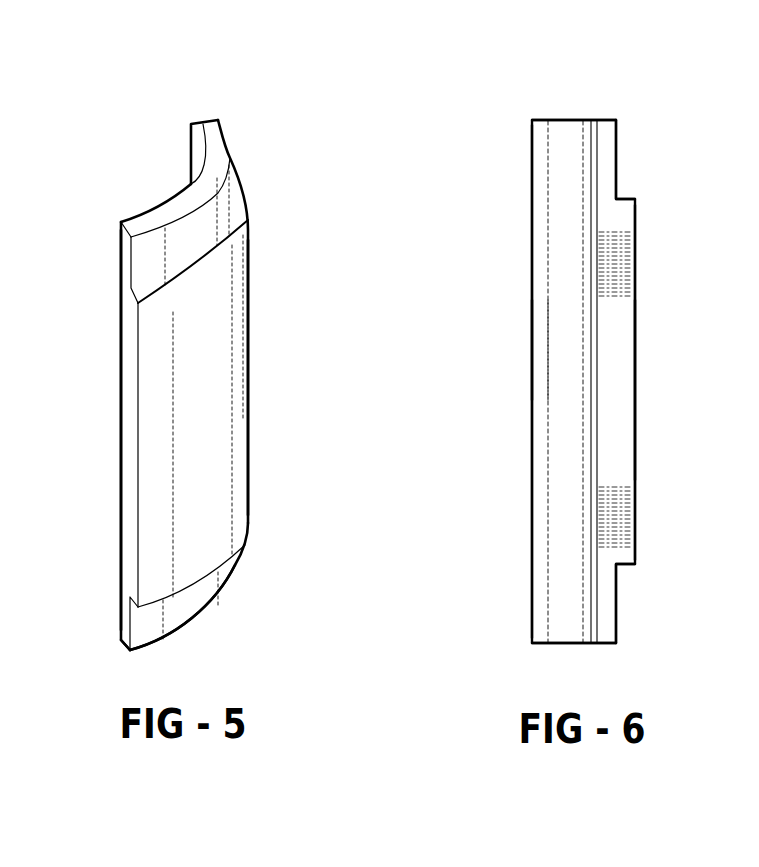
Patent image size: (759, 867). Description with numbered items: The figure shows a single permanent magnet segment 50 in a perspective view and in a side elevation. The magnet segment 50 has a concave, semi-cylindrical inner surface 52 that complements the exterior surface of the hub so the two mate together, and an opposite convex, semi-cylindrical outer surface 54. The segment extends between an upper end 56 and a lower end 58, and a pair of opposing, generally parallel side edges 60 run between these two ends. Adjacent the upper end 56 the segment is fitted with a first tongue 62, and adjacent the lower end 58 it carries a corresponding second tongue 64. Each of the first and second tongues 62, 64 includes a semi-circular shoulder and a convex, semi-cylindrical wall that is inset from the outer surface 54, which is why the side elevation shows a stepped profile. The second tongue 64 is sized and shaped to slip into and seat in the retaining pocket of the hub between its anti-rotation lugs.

In FIG. 5, the magnet segment 50 is at (217, 110).
In FIG. 6, the magnet segment 50 is at (619, 115).
In FIG. 5, the inner surface 52 is at (198, 156).
In FIG. 6, the inner surface 52 is at (555, 343).
In FIG. 5, the outer surface 54 is at (238, 398).
In FIG. 6, the outer surface 54 is at (635, 390).
In FIG. 5, the upper end 56 is at (212, 127).
In FIG. 6, the upper end 56 is at (568, 118).
In FIG. 5, the lower end 58 is at (122, 647).
In FIG. 6, the lower end 58 is at (570, 643).
In FIG. 5, the side edges 60 is at (126, 383).
In FIG. 6, the side edges 60 is at (532, 213).
In FIG. 5, the first tongue 62 is at (141, 252).
In FIG. 6, the first tongue 62 is at (617, 170).
In FIG. 5, the second tongue 64 is at (193, 608).
In FIG. 6, the second tongue 64 is at (618, 602).